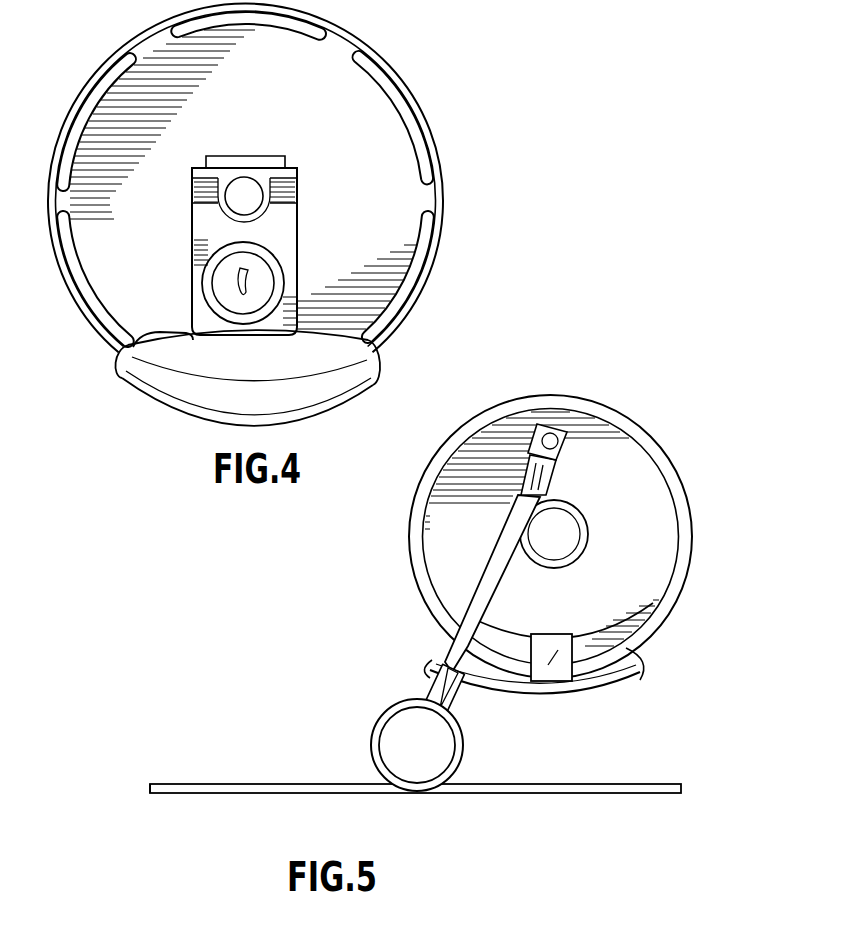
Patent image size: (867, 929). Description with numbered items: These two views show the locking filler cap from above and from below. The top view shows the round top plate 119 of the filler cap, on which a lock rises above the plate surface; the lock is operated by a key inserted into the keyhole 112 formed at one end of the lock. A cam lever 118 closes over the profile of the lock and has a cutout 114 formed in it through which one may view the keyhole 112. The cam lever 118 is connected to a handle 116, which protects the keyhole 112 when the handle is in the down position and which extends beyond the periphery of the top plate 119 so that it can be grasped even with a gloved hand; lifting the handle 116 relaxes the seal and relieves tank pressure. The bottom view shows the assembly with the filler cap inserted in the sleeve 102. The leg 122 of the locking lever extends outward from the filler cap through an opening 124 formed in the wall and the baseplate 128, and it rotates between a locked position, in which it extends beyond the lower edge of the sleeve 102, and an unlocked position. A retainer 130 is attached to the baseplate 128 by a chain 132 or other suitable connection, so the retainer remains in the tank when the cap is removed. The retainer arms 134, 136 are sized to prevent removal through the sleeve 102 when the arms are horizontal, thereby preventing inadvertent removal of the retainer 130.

In FIG. 5, the sleeve 102 is at (683, 495).
In FIG. 4, the keyhole 112 is at (250, 283).
In FIG. 4, the cutout 114 is at (189, 332).
In FIG. 4, the handle 116 is at (163, 372).
In FIG. 5, the handle 116 is at (620, 668).
In FIG. 4, the cam lever 118 is at (283, 247).
In FIG. 4, the top plate 119 is at (337, 63).
In FIG. 5, the leg 122 is at (556, 652).
In FIG. 5, the opening 124 is at (513, 645).
In FIG. 5, the baseplate 128 is at (580, 440).
In FIG. 5, the retainer 130 is at (463, 814).
In FIG. 5, the chain 132 is at (480, 573).
In FIG. 5, the retainer arm 134 is at (656, 795).
In FIG. 5, the retainer arm 136 is at (198, 793).